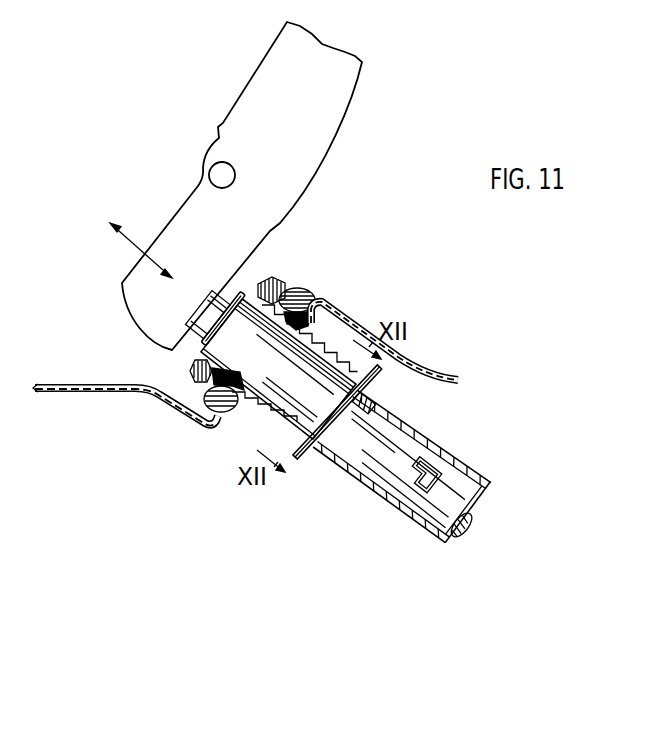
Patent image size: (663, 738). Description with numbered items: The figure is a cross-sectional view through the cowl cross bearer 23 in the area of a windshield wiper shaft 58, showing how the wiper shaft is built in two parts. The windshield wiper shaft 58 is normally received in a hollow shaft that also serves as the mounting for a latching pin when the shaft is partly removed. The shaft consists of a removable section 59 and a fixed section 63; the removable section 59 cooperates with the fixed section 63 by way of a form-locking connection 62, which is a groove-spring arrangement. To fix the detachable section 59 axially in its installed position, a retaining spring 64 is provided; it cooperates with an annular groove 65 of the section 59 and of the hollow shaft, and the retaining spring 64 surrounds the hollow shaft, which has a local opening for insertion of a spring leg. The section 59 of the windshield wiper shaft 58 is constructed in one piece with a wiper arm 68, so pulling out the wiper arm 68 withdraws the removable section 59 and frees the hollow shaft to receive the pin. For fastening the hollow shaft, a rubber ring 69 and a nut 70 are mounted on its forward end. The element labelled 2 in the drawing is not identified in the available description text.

The handle 68 is at (250, 66).
The nut 70 is at (276, 278).
The coupling nut 69 is at (300, 289).
The pin 59 is at (323, 350).
The cable 64 is at (393, 368).
The ring 65 is at (376, 400).
The locking slot 62 is at (440, 453).
The end plug 63 is at (472, 472).
The rod 58 is at (340, 455).
The hose 2 is at (71, 378).
The sheath 23 is at (110, 395).